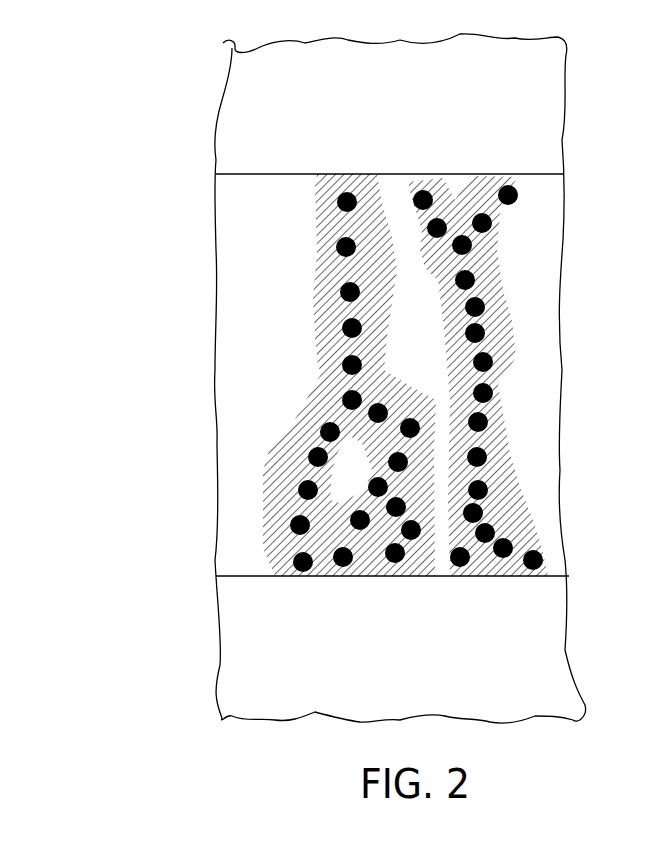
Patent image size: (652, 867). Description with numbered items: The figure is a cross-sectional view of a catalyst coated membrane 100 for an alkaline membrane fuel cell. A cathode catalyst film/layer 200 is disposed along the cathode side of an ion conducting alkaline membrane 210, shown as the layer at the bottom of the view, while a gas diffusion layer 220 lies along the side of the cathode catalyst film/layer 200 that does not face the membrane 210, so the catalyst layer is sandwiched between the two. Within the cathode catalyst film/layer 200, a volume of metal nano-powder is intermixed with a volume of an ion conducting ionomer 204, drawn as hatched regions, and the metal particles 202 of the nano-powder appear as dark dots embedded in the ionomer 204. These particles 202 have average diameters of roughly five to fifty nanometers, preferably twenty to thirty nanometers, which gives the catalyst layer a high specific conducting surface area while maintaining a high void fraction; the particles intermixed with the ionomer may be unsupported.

The catalyst coated membrane 100 is at (107, 98).
The cathode catalyst film/layer 200 is at (396, 375).
The metal particles 202 is at (344, 366).
The ion conducting ionomer 204 is at (438, 402).
The ion conducting alkaline membrane 210 is at (234, 664).
The gas diffusion layer 220 is at (233, 105).